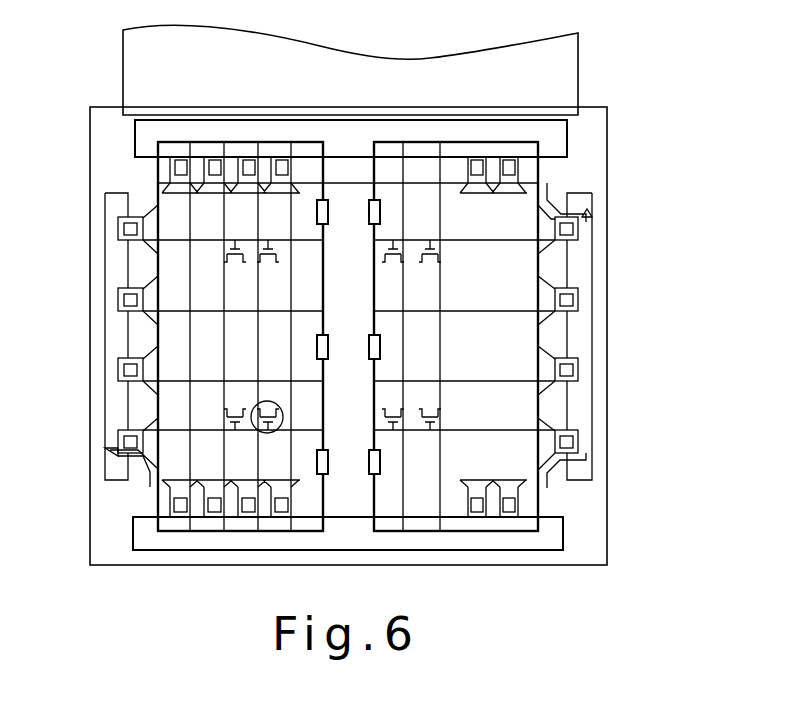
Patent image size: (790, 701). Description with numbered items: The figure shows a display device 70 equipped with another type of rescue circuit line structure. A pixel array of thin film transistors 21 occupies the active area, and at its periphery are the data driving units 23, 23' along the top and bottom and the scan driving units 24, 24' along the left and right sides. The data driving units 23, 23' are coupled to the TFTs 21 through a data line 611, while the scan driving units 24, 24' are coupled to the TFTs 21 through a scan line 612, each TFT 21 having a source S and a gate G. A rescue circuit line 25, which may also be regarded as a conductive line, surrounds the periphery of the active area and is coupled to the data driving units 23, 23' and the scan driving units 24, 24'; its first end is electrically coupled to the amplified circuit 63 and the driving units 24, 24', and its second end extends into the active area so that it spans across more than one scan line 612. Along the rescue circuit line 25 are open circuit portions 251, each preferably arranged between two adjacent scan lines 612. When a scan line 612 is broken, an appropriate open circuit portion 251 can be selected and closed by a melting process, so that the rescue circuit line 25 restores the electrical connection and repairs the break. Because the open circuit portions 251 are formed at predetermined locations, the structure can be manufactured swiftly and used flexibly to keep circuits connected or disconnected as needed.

The display device 70 is at (637, 133).
The data driving unit 23 is at (351, 113).
The data driving unit 23' is at (348, 561).
The scan driving unit 24 is at (94, 340).
The scan driving unit 24' is at (605, 335).
The rescue circuit line 25 is at (215, 141).
The amplified circuit 63 is at (117, 222).
The data line 611 is at (296, 275).
The scan line 612 is at (306, 431).
The open circuit portion 251 is at (328, 348).
The thin film transistor 21 is at (264, 401).